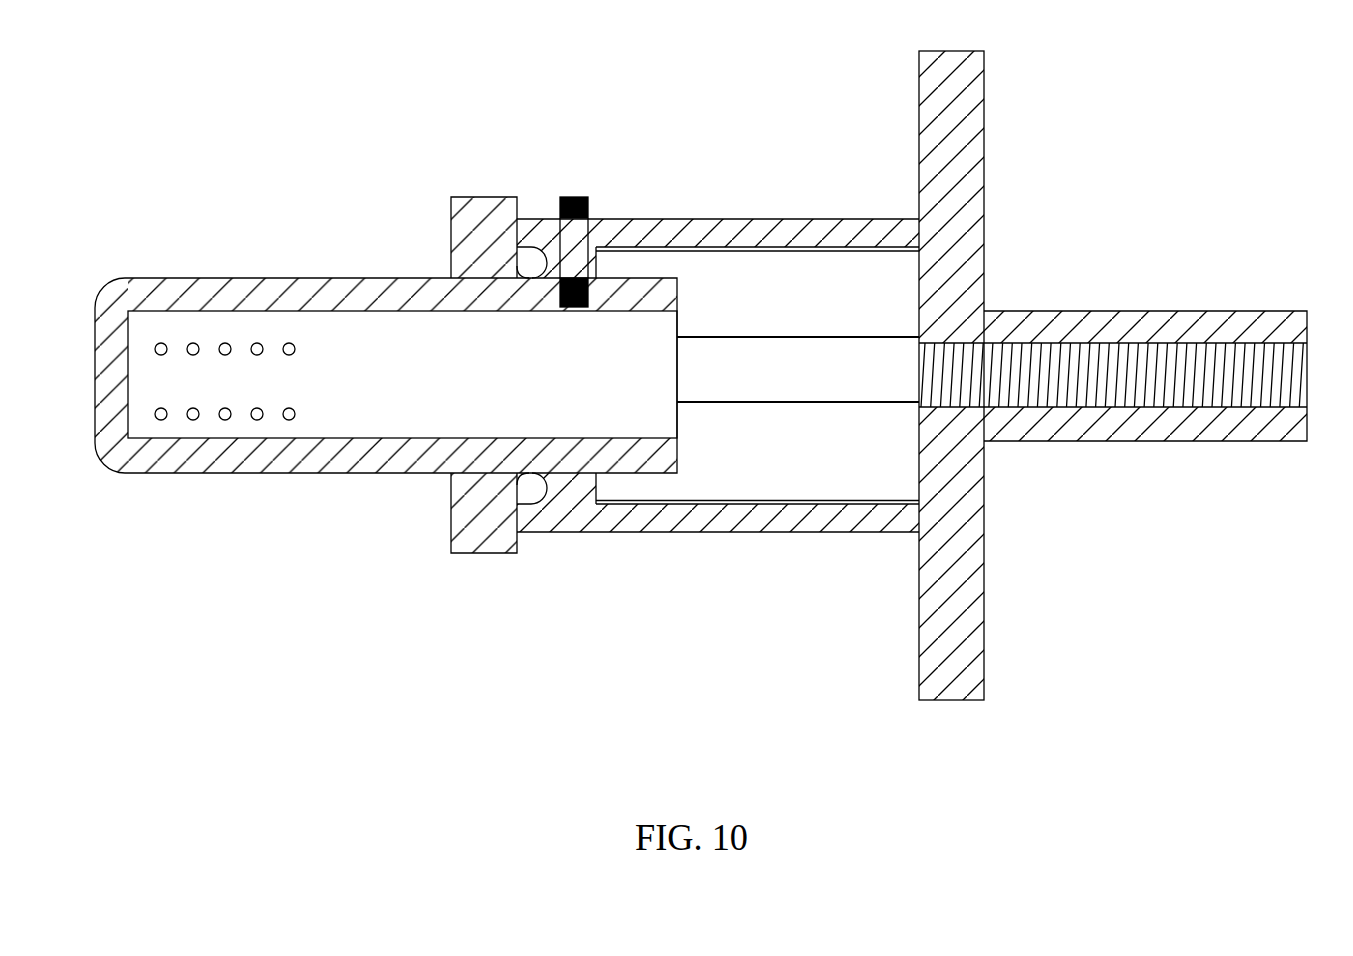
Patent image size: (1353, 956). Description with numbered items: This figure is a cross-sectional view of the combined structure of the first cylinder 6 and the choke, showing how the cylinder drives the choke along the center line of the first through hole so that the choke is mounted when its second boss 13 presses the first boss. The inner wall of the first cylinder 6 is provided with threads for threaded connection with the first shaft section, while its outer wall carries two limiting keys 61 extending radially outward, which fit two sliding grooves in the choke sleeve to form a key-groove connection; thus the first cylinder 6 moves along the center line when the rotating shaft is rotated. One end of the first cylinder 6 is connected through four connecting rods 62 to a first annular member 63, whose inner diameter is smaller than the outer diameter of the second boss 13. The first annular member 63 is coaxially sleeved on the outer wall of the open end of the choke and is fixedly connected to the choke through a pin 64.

The second boss 13 is at (485, 218).
The first cylinder 6 is at (1118, 332).
The limiting key 61 is at (987, 129).
The connecting rod 62 is at (758, 219).
The first annular member 63 is at (573, 488).
The pin 64 is at (575, 197).